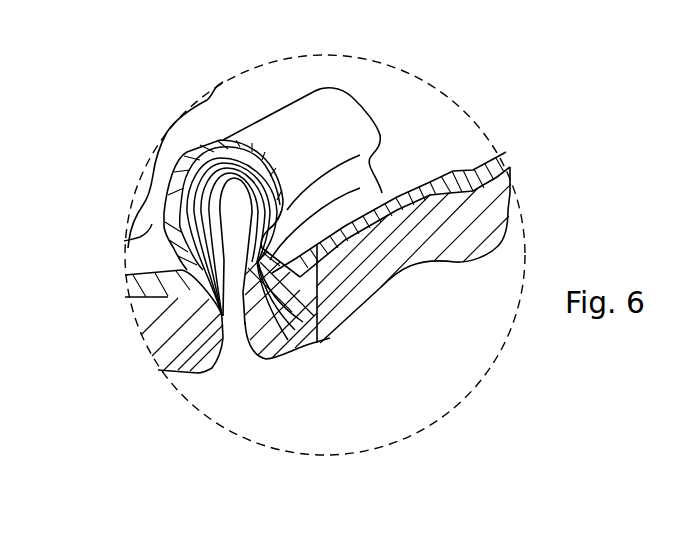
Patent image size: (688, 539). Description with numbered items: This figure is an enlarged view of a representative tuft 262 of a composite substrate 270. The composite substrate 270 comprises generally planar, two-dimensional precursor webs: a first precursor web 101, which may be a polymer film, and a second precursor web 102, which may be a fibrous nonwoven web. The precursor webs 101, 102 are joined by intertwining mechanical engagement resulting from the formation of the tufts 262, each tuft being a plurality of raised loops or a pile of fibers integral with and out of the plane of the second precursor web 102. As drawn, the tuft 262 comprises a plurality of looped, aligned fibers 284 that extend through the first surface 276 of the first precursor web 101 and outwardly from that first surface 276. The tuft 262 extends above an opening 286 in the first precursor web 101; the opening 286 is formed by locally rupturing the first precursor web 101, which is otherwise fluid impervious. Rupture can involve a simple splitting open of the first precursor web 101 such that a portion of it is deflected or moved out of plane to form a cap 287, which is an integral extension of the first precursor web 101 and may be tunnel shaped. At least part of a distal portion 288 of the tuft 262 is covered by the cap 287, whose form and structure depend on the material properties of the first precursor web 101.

The composite substrate 270 is at (178, 108).
The tuft 262 is at (357, 120).
The cap 287 is at (303, 108).
The distal portion 288 is at (200, 165).
The looped, aligned fibers 284 is at (197, 190).
The opening 286 is at (235, 352).
The first precursor web 101 is at (152, 284).
The second precursor web 102 is at (150, 348).
The first surface 276 is at (468, 137).